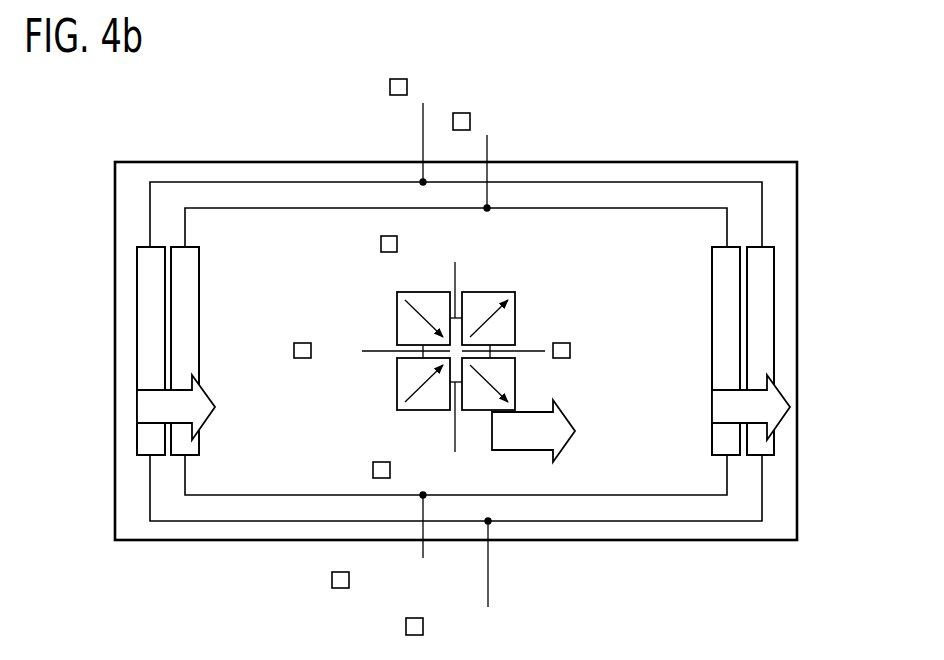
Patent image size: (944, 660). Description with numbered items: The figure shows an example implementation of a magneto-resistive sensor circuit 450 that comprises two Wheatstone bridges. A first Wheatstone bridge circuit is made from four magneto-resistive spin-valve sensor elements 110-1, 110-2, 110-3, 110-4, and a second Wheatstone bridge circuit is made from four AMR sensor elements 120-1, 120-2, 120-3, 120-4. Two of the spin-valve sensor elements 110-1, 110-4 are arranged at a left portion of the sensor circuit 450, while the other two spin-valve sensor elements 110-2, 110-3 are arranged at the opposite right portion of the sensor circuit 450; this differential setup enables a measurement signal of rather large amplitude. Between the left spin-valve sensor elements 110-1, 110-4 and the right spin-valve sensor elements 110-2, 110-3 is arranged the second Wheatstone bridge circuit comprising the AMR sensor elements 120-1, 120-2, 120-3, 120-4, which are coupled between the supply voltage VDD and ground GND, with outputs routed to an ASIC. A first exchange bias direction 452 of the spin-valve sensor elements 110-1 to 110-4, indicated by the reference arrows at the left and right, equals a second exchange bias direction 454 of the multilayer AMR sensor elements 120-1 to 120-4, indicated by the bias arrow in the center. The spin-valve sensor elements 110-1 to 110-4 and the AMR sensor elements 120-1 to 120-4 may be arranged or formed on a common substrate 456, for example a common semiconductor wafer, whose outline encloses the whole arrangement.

The sensor circuit 450 is at (686, 103).
The common substrate 456 is at (216, 541).
The magneto-resistive spin-valve sensor element 110-1 is at (137, 312).
The magneto-resistive spin-valve sensor element 110-2 is at (712, 264).
The magneto-resistive spin-valve sensor element 110-3 is at (776, 314).
The magneto-resistive spin-valve sensor element 110-4 is at (199, 264).
The AMR sensor element 120-1 is at (397, 302).
The AMR sensor element 120-2 is at (515, 302).
The AMR sensor element 120-3 is at (397, 395).
The AMR sensor element 120-4 is at (515, 385).
The first exchange bias direction 452 is at (128, 412).
The second exchange bias direction 454 is at (564, 472).